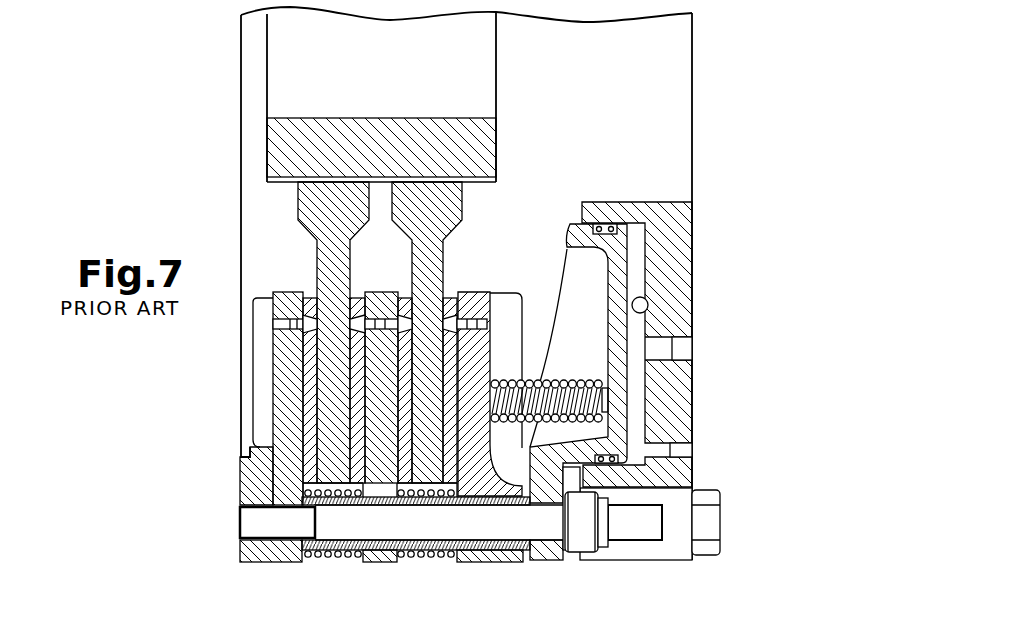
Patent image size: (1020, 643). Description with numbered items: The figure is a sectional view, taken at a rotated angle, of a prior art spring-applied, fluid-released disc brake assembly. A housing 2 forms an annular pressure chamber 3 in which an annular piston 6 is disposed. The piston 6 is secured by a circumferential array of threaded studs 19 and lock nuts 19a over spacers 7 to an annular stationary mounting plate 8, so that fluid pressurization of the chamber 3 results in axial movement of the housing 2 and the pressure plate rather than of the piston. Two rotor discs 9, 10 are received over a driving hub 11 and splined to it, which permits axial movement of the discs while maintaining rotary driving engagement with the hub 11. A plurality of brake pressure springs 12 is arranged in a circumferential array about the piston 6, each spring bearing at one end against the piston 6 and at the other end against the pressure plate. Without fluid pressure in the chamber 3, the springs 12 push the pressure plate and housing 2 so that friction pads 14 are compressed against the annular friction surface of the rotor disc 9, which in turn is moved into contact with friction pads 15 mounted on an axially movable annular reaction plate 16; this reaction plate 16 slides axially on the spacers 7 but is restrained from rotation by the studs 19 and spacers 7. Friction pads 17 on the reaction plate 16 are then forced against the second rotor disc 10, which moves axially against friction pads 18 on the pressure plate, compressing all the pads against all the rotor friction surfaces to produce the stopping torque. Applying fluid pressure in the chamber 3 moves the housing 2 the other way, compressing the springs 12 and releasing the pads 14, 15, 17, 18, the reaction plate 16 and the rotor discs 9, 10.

The housing 2 is at (692, 410).
The annular pressure chamber 3 is at (648, 303).
The annular piston 6 is at (627, 265).
The spacers 7 is at (438, 560).
The annular stationary mounting plate 8 is at (310, 440).
The rotor disc 9 is at (298, 207).
The rotor disc 10 is at (462, 207).
The driving hub 11 is at (267, 152).
The brake pressure springs 12 is at (541, 380).
The friction pads 14 is at (302, 440).
The friction pads 15 is at (360, 428).
The reaction plate 16 is at (378, 423).
The friction pads 17 is at (400, 430).
The friction pads 18 is at (452, 447).
The threaded studs 19 is at (472, 523).
The lock nuts 19a is at (573, 555).